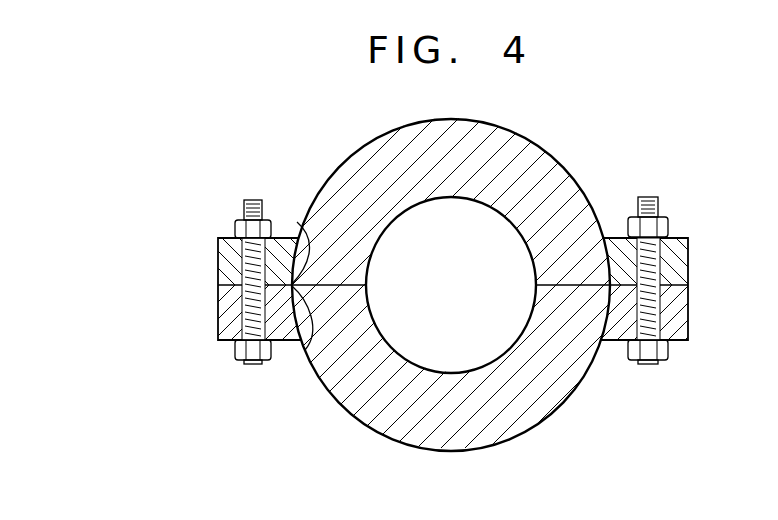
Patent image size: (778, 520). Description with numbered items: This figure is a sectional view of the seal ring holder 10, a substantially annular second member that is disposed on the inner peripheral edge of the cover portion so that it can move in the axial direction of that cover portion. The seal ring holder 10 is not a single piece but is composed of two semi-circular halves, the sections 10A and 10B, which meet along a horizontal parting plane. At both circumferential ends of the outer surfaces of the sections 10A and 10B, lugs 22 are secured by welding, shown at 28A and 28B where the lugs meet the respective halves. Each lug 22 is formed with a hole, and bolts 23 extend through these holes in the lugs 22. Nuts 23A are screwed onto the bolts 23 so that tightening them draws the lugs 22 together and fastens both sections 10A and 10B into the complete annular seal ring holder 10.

The seal ring holder 10 is at (417, 297).
The semi-circular section 10A is at (364, 165).
The semi-circular section 10B is at (442, 427).
The lug 22 is at (228, 316).
The bolt 23 is at (256, 362).
The nut 23A is at (240, 228).
The weld 28A is at (297, 222).
The weld 28B is at (304, 352).